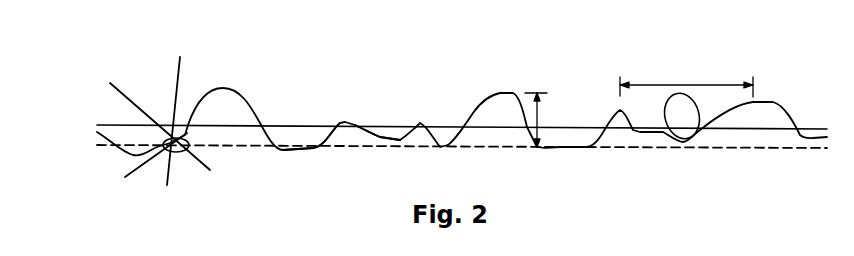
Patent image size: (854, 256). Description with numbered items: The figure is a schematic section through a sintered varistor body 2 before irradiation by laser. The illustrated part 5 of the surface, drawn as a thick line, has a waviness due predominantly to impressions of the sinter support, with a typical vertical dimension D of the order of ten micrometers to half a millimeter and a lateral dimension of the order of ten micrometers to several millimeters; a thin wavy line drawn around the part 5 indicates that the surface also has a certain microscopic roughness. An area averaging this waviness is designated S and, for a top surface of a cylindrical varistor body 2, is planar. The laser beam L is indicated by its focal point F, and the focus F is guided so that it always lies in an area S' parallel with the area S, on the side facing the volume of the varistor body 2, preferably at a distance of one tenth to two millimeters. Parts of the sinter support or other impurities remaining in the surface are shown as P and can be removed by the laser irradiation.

The sintered varistor body 2 is at (415, 162).
The part of the surface 5 is at (490, 100).
The laser beam L is at (137, 107).
The focal point F is at (125, 177).
The area S is at (311, 104).
The area parallel with the area S S' is at (377, 103).
The vertical dimension D is at (544, 120).
The parts of the sinter support P is at (680, 113).